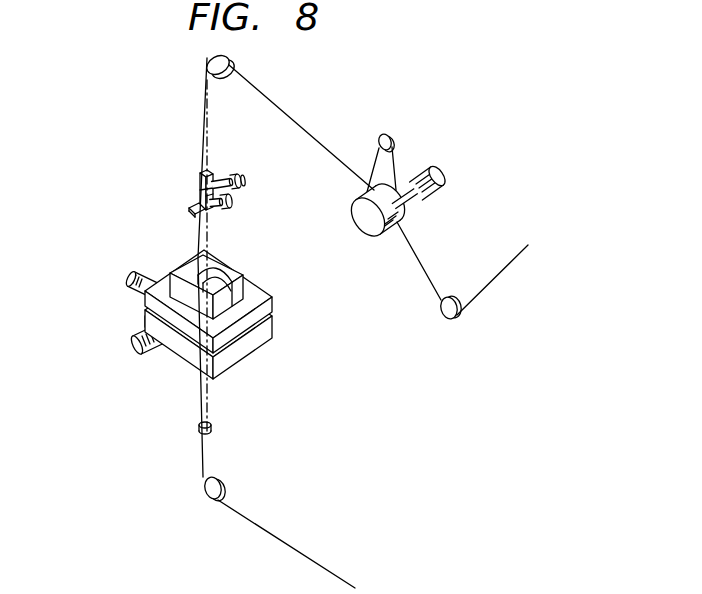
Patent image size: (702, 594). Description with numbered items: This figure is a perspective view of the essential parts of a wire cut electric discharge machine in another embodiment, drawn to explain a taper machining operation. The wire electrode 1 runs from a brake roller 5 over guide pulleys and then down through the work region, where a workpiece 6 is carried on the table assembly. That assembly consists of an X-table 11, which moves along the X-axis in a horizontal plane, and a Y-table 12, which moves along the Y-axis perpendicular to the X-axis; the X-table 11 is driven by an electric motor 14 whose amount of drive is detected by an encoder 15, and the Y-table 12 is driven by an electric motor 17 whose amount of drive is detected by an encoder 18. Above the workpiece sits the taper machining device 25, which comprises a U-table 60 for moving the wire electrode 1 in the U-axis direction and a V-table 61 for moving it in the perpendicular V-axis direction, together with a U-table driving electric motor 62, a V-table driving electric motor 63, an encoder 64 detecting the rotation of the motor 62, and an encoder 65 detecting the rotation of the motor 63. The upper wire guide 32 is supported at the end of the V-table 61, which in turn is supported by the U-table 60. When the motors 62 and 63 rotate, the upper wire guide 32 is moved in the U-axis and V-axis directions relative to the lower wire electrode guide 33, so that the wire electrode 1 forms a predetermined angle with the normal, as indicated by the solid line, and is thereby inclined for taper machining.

The wire electrode 1 is at (423, 266).
The brake roller 5 is at (370, 228).
The workpiece 6 is at (248, 278).
The X-table 11 is at (266, 346).
The Y-table 12 is at (425, 172).
The X-table driving electric motor 14 is at (142, 287).
The encoder 15 is at (133, 275).
The Y-table driving electric motor 17 is at (155, 340).
The encoder 18 is at (132, 348).
The taper machining device 25 is at (214, 180).
The upper wire guide 32 is at (188, 210).
The lower wire electrode guide 33 is at (212, 430).
The U-table 60 is at (205, 174).
The V-table 61 is at (217, 207).
The U-table driving electric motor 62 is at (221, 209).
The V-table driving electric motor 63 is at (227, 177).
The encoder 64 is at (247, 205).
The encoder 65 is at (248, 182).